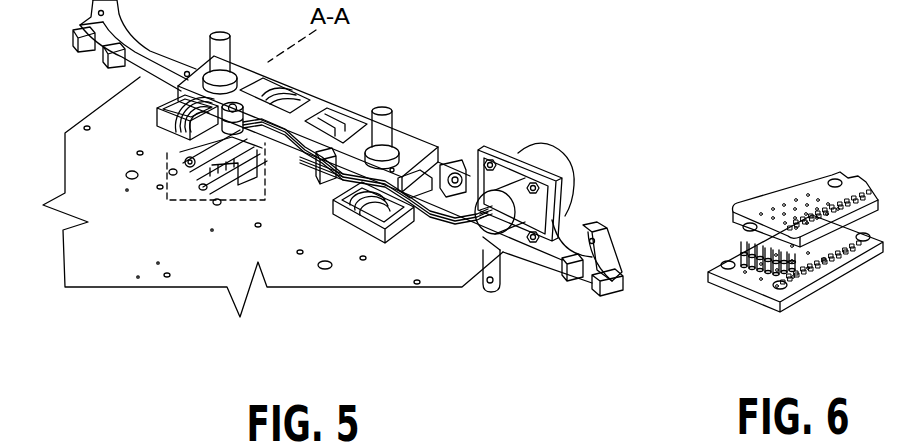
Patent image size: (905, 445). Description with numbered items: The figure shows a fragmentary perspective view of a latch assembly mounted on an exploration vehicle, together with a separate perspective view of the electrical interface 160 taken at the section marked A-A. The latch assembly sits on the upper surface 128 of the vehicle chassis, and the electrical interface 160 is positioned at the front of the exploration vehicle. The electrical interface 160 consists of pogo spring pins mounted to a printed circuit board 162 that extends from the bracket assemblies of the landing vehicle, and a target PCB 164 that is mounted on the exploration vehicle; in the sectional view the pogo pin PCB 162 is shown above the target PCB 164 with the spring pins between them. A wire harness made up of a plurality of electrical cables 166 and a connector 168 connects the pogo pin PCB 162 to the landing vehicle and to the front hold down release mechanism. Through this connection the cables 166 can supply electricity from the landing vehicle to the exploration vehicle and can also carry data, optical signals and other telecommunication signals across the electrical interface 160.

In FIG. 5, the upper surface 128 is at (387, 270).
In FIG. 5, the electrical interface 160 is at (182, 133).
In FIG. 6, the electrical interface 160 is at (782, 226).
In FIG. 6, the printed circuit board 162 is at (798, 185).
In FIG. 6, the target PCB 164 is at (730, 266).
In FIG. 5, the electrical cables 166 is at (333, 200).
In FIG. 5, the connector 168 is at (209, 110).